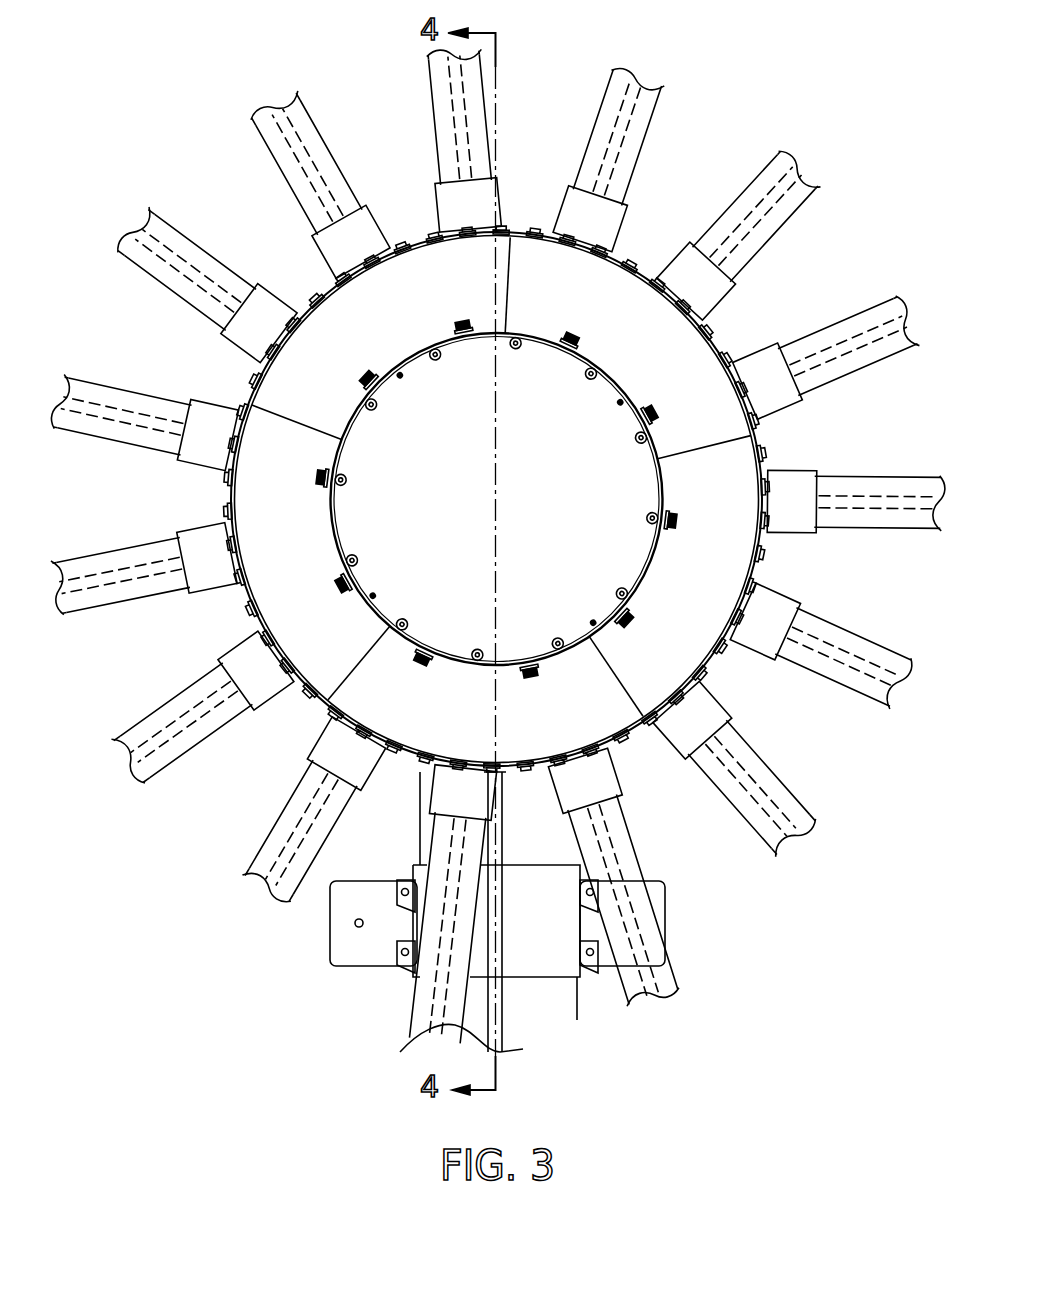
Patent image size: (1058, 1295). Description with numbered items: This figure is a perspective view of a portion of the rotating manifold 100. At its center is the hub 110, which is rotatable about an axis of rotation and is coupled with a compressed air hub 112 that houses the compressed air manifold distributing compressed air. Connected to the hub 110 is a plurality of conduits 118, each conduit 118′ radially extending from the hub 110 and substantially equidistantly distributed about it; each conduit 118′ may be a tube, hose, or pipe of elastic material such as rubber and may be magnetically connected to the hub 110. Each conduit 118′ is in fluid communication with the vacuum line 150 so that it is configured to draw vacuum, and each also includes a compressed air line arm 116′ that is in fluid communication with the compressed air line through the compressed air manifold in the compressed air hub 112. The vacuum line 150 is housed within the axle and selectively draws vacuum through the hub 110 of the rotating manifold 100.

The rotating manifold 100 is at (128, 104).
The hub 110 is at (298, 276).
The compressed air hub 112 is at (629, 391).
The compressed air line arm 116′ is at (312, 143).
The plurality of conduits 118 is at (838, 148).
The conduit 118′ is at (653, 122).
The vacuum line 150 is at (578, 1007).